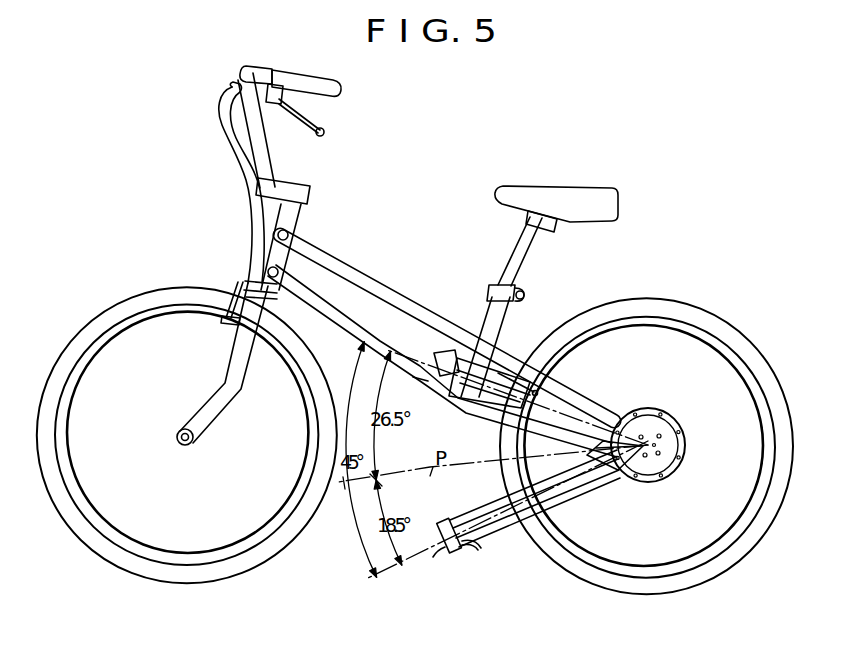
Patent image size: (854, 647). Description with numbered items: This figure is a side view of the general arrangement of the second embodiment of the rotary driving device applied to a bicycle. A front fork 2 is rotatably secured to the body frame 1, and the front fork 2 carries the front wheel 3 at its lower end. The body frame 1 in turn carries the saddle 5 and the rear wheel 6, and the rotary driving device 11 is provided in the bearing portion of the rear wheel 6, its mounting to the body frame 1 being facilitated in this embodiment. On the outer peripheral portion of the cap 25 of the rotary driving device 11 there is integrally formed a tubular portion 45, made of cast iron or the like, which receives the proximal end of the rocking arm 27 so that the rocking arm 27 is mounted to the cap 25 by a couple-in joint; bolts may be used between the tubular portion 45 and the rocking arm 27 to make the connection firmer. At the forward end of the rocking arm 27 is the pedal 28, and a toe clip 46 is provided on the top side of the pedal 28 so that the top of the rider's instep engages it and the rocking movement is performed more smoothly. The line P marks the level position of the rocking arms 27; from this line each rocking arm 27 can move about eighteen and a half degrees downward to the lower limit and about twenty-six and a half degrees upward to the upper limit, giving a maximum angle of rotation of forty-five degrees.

The body frame 1 is at (374, 284).
The front fork 2 is at (217, 408).
The front wheel 3 is at (267, 568).
The saddle 5 is at (583, 187).
The rear wheel 6 is at (720, 293).
The rotary driving device 11 is at (705, 419).
The cap 25 is at (660, 460).
The rocking arm 27 is at (530, 518).
The pedal 28 is at (449, 552).
The tubular portion 45 is at (625, 470).
The toe clip 46 is at (480, 545).